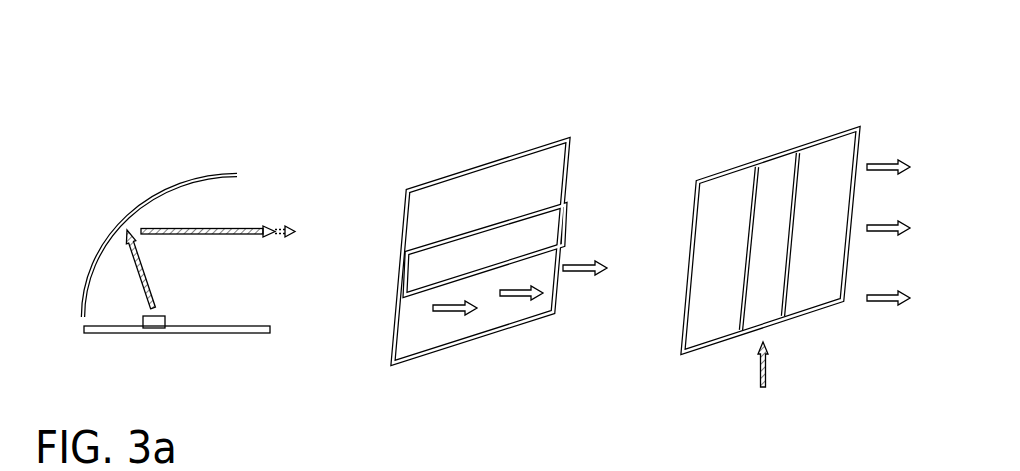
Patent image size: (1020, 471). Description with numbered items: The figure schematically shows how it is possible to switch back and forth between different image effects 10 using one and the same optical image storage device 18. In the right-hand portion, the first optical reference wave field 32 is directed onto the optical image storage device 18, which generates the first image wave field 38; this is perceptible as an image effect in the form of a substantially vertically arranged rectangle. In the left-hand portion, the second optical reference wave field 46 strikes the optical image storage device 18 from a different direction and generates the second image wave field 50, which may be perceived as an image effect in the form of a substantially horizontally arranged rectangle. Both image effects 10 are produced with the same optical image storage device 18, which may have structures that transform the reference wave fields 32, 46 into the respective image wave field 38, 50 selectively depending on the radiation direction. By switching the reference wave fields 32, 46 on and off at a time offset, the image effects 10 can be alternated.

The image effects 10 is at (625, 190).
The optical image storage device 18 is at (455, 162).
The first optical reference wave field 32 is at (763, 368).
The first image wave field 38 is at (885, 298).
The second optical reference wave field 46 is at (250, 231).
The second image wave field 50 is at (453, 308).